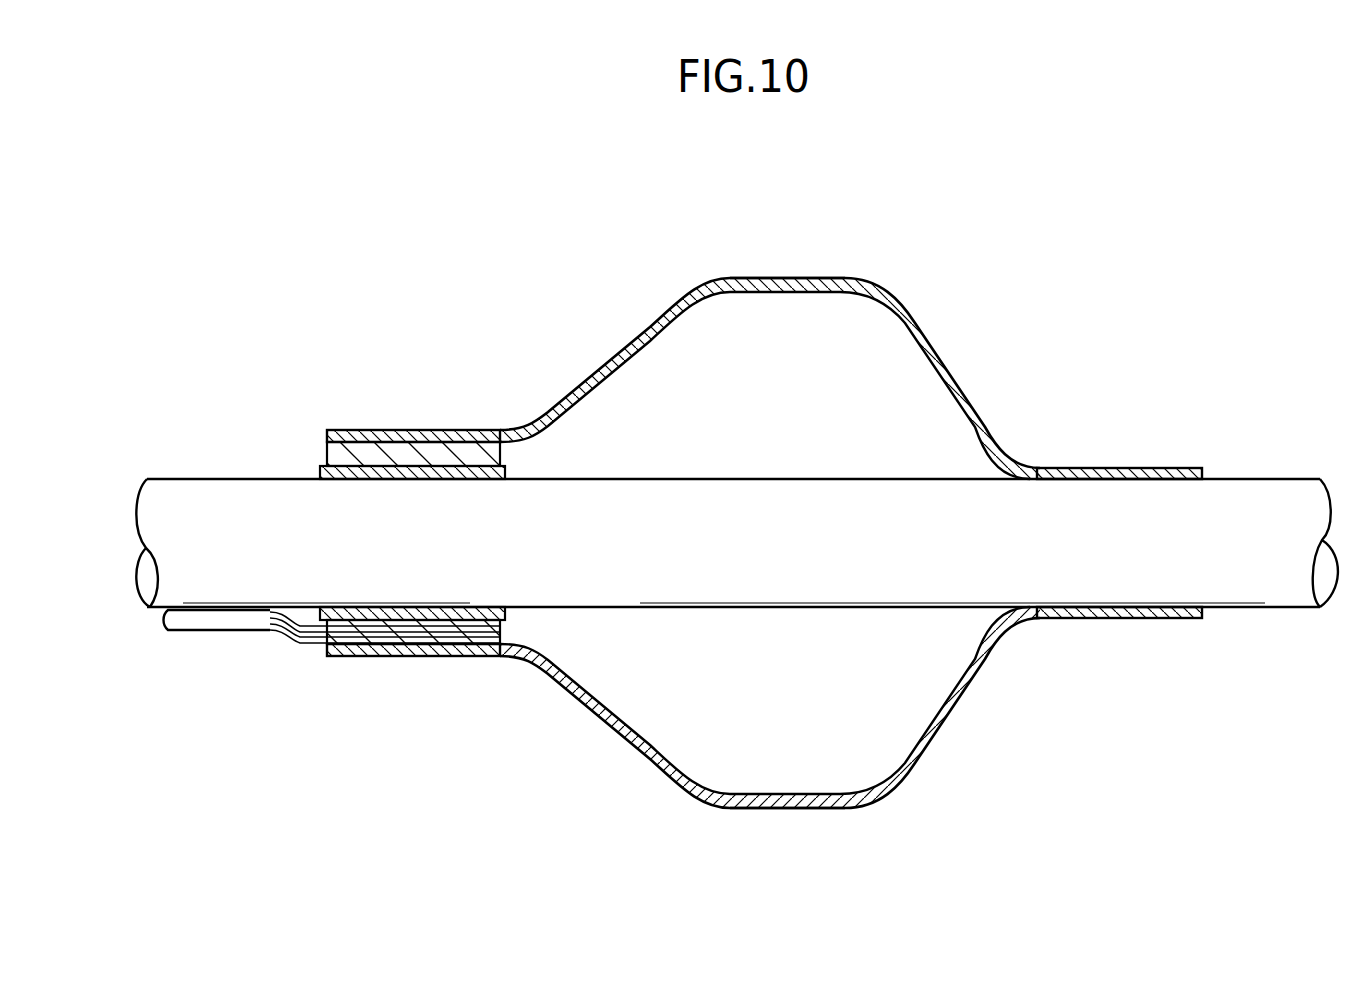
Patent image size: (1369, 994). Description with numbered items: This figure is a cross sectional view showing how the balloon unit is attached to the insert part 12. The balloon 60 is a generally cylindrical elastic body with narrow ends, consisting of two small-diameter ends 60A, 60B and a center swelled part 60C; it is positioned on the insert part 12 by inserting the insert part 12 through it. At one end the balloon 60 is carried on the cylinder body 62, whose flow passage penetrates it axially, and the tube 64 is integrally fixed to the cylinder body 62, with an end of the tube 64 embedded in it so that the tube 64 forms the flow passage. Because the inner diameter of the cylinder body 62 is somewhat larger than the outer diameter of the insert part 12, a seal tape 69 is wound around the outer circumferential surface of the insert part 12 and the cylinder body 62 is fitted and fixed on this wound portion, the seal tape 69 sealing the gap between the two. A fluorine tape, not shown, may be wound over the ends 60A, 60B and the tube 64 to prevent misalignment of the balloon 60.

The insert part 12 is at (1265, 500).
The balloon 60 is at (701, 270).
The end of balloon 60A is at (462, 429).
The end of balloon 60B is at (1133, 466).
The center swelled part 60C is at (876, 286).
The cylinder body 62 is at (348, 432).
The tube 64 is at (230, 621).
The seal tape 69 is at (320, 470).